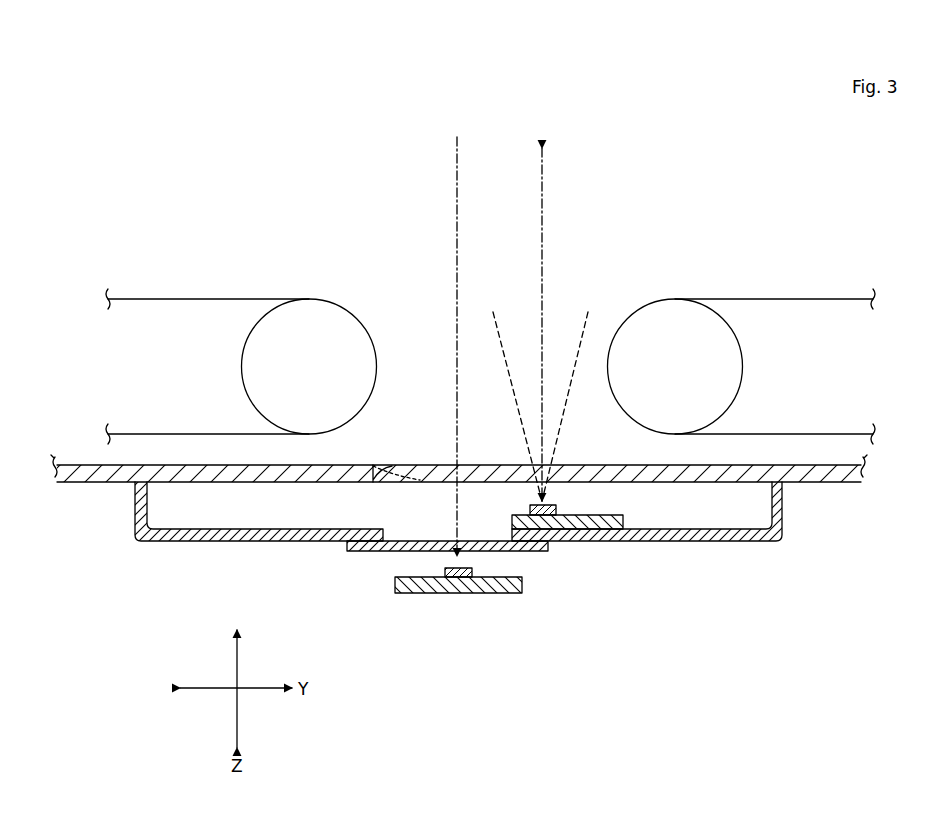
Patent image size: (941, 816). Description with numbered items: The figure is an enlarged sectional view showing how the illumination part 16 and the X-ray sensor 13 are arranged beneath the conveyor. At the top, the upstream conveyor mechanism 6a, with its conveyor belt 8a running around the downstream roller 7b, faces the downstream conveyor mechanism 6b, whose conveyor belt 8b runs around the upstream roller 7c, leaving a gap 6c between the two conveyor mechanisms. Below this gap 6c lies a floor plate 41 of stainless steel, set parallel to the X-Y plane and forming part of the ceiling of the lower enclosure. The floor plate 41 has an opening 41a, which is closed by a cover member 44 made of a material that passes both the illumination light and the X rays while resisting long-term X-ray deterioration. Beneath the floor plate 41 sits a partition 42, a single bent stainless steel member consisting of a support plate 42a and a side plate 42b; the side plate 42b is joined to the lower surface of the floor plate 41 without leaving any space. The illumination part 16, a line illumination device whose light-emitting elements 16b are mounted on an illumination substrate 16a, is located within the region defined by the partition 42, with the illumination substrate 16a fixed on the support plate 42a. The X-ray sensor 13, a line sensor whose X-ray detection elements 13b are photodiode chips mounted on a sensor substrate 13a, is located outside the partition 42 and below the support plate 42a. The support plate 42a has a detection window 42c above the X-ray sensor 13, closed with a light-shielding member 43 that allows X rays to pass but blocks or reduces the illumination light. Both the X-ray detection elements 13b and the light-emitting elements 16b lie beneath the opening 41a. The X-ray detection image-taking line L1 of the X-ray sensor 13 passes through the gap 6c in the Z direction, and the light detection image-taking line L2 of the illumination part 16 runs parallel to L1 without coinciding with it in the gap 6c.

The upstream conveyor mechanism 6a is at (776, 270).
The downstream conveyor mechanism 6b is at (225, 256).
The gap 6c is at (406, 345).
The downstream roller 7b is at (650, 322).
The upstream roller 7c is at (310, 325).
The conveyor belt 8a is at (832, 299).
The conveyor belt 8b is at (176, 299).
The X-ray sensor 13 is at (491, 598).
The sensor substrate 13a is at (410, 594).
The X-ray detection element 13b is at (428, 594).
The illumination part 16 is at (660, 543).
The illumination substrate 16a is at (585, 543).
The light-emitting element 16b is at (626, 523).
The floor plate 41 is at (828, 482).
The opening 41a is at (395, 465).
The partition 42 is at (195, 546).
The support plate 42a is at (728, 543).
The side plate 42b is at (135, 498).
The detection window 42c is at (395, 552).
The light-shielding member 43 is at (532, 553).
The cover member 44 is at (440, 465).
The X-ray detection image-taking line L1 is at (456, 158).
The light detection image-taking line L2 is at (543, 180).